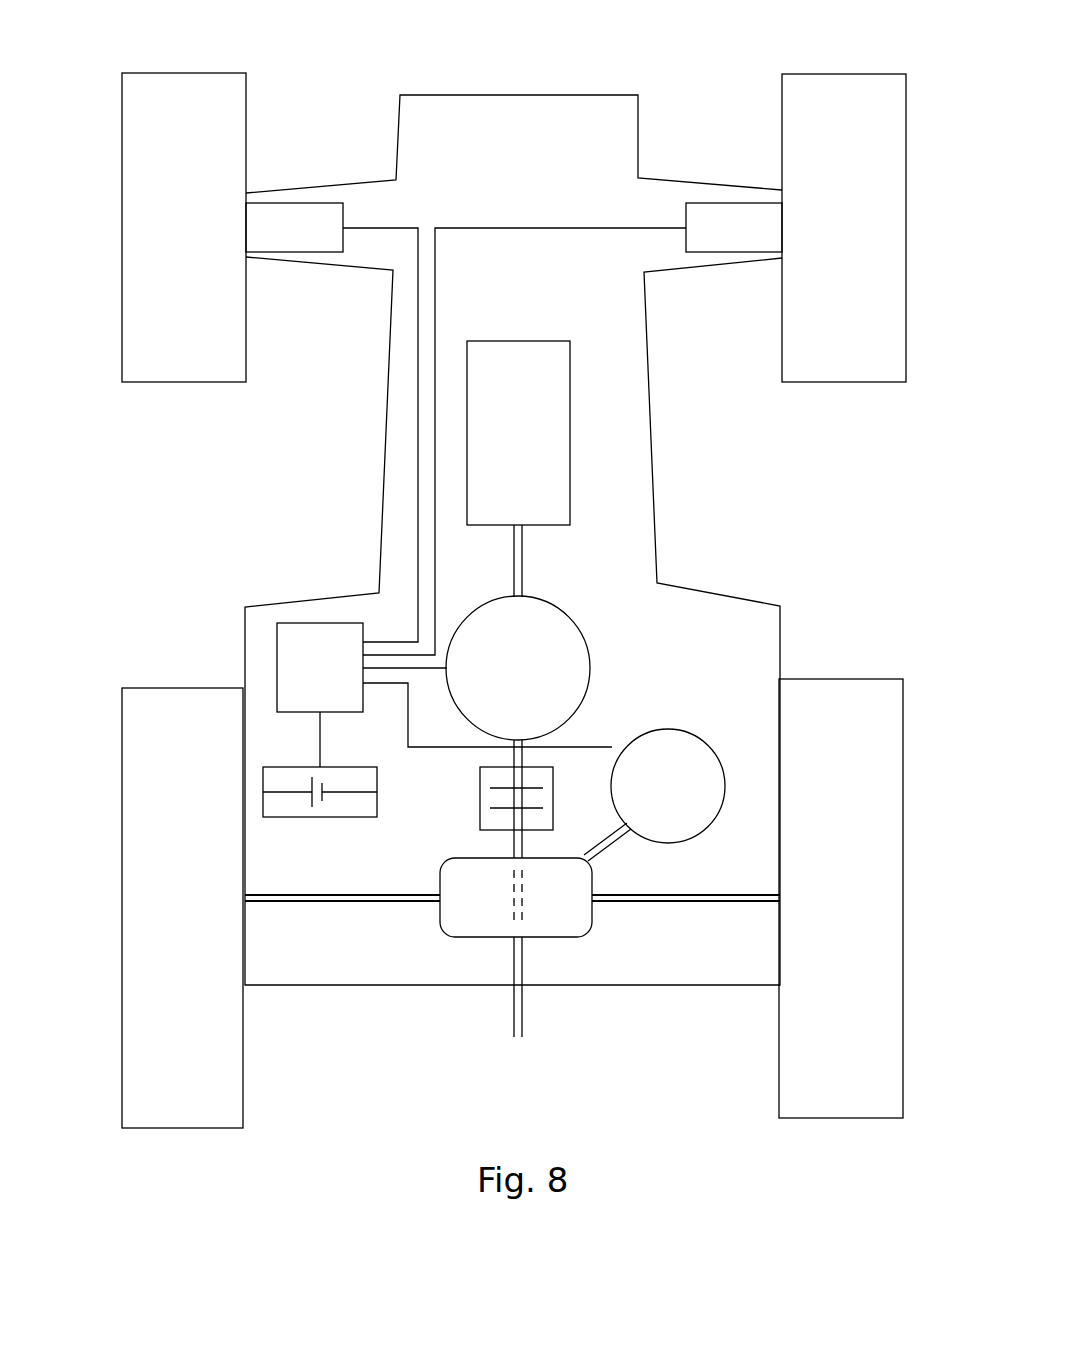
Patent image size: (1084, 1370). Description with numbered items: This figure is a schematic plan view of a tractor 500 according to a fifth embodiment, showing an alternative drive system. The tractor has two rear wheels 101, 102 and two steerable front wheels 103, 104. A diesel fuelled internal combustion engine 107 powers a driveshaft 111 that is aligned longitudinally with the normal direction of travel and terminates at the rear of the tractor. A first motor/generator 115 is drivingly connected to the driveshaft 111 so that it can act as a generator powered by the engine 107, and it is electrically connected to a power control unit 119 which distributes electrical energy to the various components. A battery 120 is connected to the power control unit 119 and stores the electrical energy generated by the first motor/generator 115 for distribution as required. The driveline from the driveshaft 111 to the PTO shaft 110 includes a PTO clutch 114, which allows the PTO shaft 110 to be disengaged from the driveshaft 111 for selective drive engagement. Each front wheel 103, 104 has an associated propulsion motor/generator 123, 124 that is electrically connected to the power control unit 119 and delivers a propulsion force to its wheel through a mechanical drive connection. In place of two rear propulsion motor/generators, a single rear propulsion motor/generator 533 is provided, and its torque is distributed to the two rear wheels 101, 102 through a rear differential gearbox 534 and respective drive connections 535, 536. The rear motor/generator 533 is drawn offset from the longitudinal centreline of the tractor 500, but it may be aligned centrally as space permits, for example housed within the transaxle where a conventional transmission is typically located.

The tractor 500 is at (400, 62).
The rear wheel 101 is at (143, 1128).
The rear wheel 102 is at (873, 1118).
The front wheel 103 is at (150, 382).
The front wheel 104 is at (873, 382).
The internal combustion engine 107 is at (532, 452).
The PTO shaft 110 is at (520, 1013).
The driveshaft 111 is at (523, 573).
The PTO clutch 114 is at (483, 795).
The first motor/generator 115 is at (590, 660).
The power control unit 119 is at (328, 692).
The battery 120 is at (360, 820).
The propulsion motor/generator 123 is at (303, 252).
The propulsion motor/generator 124 is at (732, 252).
The rear propulsion motor/generator 533 is at (698, 738).
The rear differential gearbox 534 is at (472, 937).
The drive connection 535 is at (330, 903).
The drive connection 536 is at (693, 903).